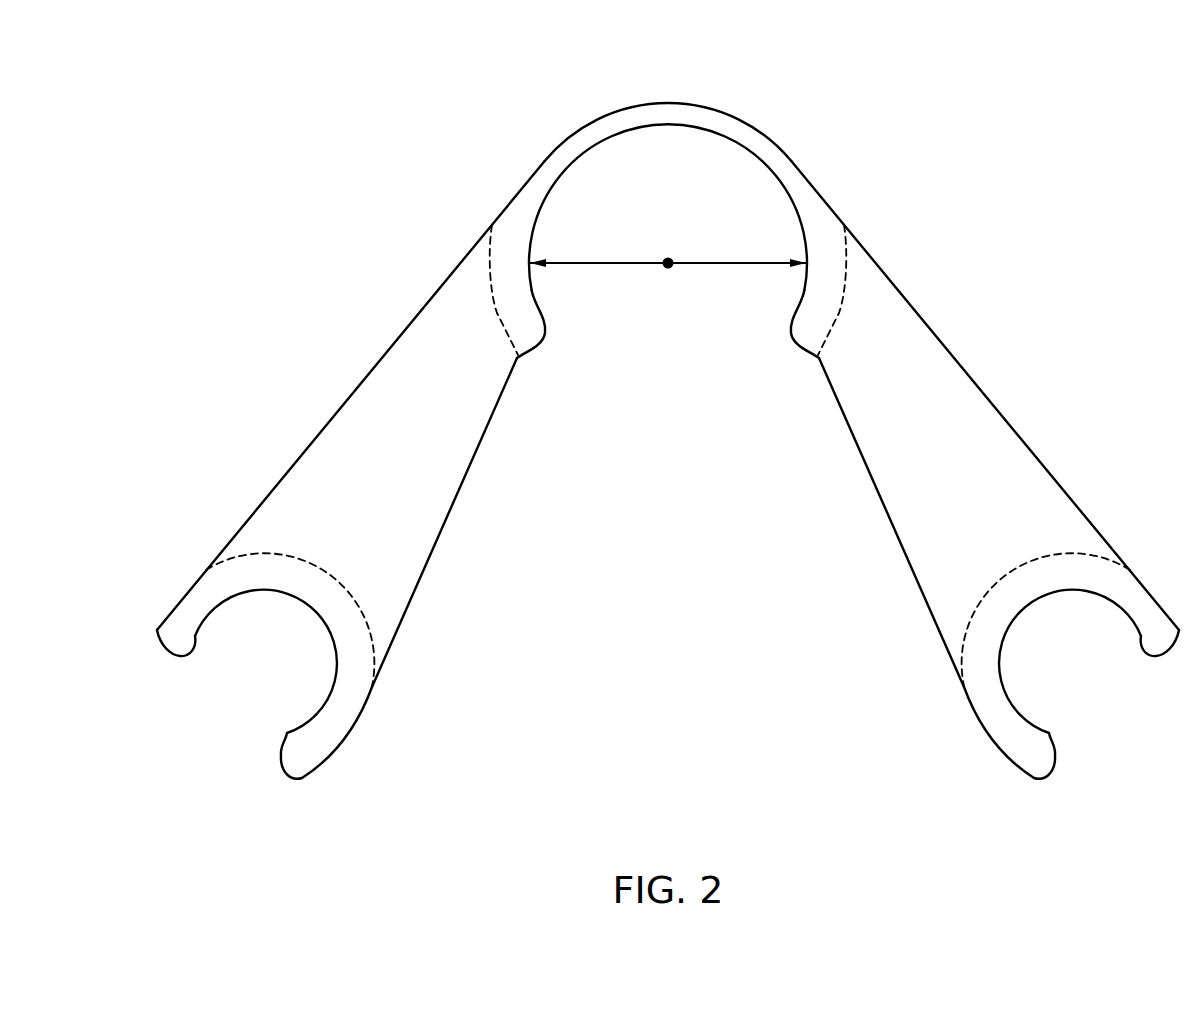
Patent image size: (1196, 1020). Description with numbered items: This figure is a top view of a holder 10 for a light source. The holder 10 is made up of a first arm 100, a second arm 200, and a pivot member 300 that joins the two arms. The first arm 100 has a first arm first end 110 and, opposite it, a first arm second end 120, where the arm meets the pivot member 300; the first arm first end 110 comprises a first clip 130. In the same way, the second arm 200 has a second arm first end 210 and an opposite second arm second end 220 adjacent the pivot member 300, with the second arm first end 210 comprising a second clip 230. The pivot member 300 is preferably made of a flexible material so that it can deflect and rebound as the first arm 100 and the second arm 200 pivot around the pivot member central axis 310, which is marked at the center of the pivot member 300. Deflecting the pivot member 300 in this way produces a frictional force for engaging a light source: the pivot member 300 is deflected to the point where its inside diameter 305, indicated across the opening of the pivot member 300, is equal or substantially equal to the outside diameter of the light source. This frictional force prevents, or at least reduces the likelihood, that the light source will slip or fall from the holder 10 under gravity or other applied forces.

The holder 10 is at (902, 84).
The first arm 100 is at (335, 432).
The first arm first end 110 is at (343, 583).
The first arm second end 120 is at (497, 313).
The first clip 130 is at (352, 745).
The second arm 200 is at (1001, 432).
The second arm first end 210 is at (993, 583).
The second arm second end 220 is at (841, 315).
The second clip 230 is at (984, 745).
The pivot member 300 is at (675, 98).
The inside diameter 305 is at (600, 263).
The pivot member central axis 310 is at (670, 268).